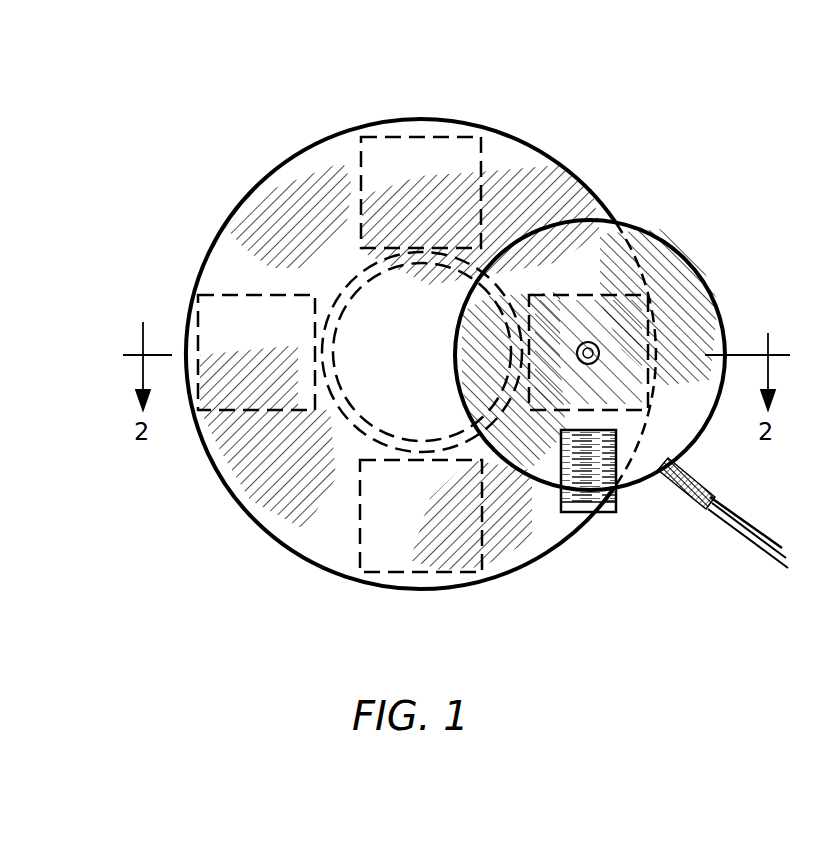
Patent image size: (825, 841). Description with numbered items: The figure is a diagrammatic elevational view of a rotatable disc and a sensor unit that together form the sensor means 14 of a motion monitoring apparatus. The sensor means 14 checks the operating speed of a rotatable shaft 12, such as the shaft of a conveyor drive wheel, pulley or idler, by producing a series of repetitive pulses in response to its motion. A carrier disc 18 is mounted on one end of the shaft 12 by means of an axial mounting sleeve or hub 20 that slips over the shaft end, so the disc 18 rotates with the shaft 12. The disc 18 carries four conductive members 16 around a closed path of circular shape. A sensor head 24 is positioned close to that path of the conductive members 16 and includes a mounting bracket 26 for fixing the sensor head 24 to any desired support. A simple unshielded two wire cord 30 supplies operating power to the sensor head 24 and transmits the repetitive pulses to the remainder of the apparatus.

The sensor means 14 is at (176, 105).
The rotatable shaft 12 is at (355, 278).
The conductive members 16 is at (393, 137).
The carrier disc 18 is at (567, 178).
The axial mounting sleeve or hub 20 is at (345, 300).
The sensor head 24 is at (681, 253).
The mounting bracket 26 is at (604, 514).
The two wire cord 30 is at (698, 503).